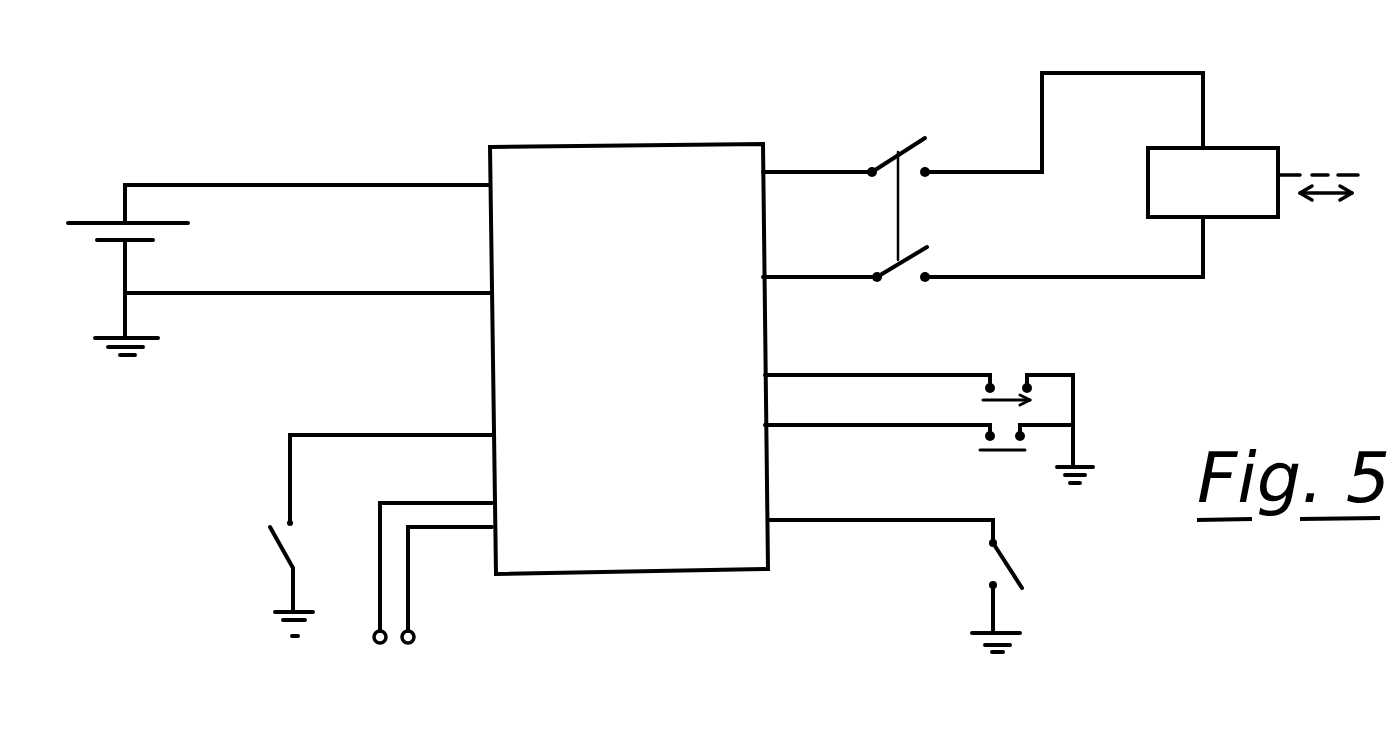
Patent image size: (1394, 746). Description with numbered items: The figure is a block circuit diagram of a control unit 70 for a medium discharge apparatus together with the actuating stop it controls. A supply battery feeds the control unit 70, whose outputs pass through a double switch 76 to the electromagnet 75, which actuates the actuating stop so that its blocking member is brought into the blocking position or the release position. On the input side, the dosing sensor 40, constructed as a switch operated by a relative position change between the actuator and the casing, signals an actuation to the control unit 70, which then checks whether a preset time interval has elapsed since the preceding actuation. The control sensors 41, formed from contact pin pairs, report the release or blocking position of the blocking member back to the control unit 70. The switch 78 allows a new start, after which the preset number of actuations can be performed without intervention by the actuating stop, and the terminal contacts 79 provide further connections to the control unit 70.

The control unit 70 is at (636, 299).
The electromagnet 75 is at (1226, 202).
The double-pole switch 76 is at (892, 125).
The control sensors 41 is at (1017, 363).
The dosing sensor 40 is at (267, 563).
The switch 78 is at (975, 565).
The terminal contacts 79 is at (433, 658).